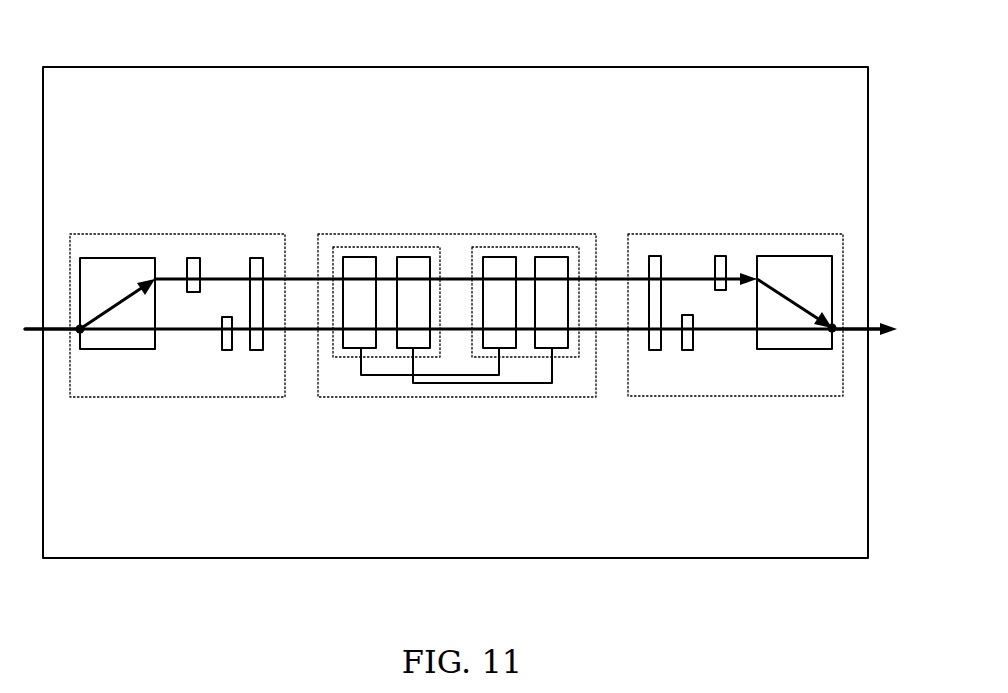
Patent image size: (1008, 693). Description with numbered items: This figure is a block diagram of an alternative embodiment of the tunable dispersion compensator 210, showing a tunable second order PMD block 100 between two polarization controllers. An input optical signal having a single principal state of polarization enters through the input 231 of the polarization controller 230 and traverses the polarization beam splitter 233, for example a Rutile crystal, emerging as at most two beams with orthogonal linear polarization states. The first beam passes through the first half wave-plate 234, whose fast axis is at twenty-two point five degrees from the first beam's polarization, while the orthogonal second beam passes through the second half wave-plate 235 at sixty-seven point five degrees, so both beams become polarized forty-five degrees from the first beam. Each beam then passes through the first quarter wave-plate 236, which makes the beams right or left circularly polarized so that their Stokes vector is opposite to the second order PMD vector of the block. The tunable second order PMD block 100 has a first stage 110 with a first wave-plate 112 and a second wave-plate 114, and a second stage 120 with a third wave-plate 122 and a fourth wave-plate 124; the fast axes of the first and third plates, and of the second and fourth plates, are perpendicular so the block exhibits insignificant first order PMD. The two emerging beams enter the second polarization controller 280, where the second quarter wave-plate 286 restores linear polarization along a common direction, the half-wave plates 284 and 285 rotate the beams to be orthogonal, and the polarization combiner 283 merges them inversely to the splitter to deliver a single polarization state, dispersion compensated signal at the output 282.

The tunable dispersion compensator 210 is at (465, 67).
The tunable second order PMD block 100 is at (455, 234).
The first stage 110 is at (345, 357).
The first wave-plate 112 is at (373, 348).
The second wave-plate 114 is at (423, 348).
The second stage 120 is at (572, 357).
The third wave-plate 122 is at (492, 348).
The fourth wave-plate 124 is at (540, 348).
The polarization controller 230 is at (226, 234).
The input 231 is at (78, 327).
The polarization beam splitter 233 is at (115, 258).
The first half wave-plate 234 is at (194, 292).
The second half wave-plate 235 is at (228, 350).
The first quarter wave-plate 236 is at (258, 258).
The second polarization controller 280 is at (688, 234).
The output 282 is at (842, 326).
The polarization combiner 283 is at (800, 256).
The half-wave plate 284 is at (721, 290).
The half-wave plate 285 is at (688, 350).
The second quarter wave-plate 286 is at (655, 256).